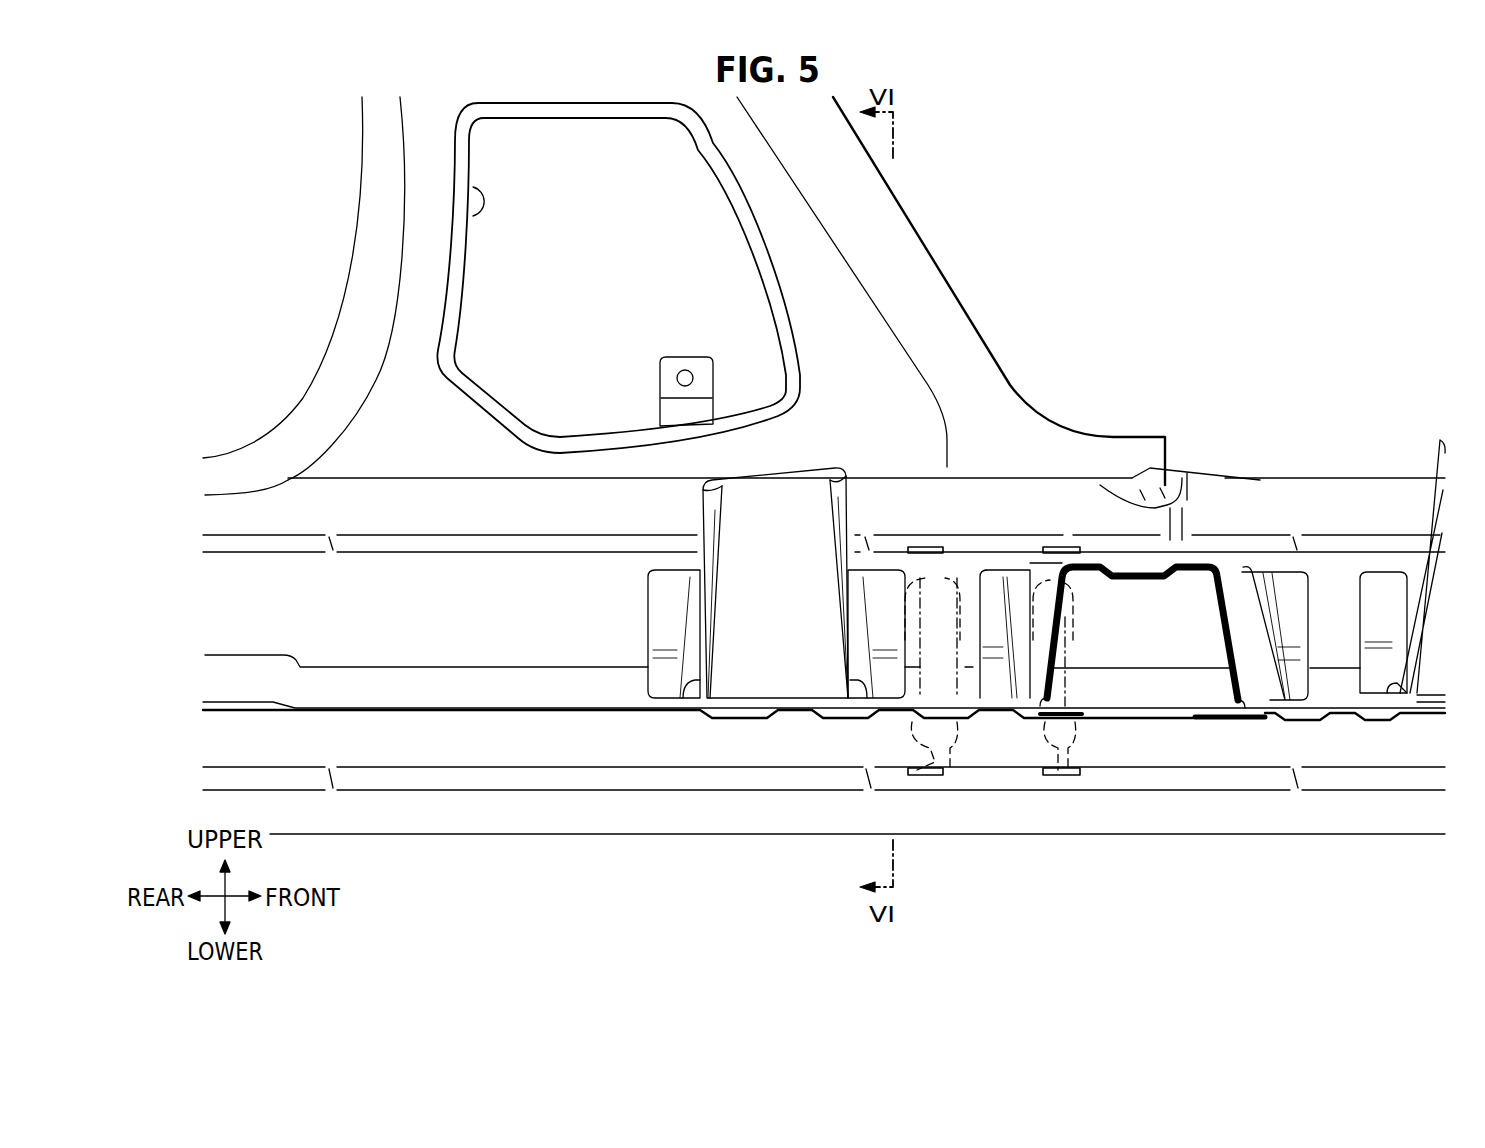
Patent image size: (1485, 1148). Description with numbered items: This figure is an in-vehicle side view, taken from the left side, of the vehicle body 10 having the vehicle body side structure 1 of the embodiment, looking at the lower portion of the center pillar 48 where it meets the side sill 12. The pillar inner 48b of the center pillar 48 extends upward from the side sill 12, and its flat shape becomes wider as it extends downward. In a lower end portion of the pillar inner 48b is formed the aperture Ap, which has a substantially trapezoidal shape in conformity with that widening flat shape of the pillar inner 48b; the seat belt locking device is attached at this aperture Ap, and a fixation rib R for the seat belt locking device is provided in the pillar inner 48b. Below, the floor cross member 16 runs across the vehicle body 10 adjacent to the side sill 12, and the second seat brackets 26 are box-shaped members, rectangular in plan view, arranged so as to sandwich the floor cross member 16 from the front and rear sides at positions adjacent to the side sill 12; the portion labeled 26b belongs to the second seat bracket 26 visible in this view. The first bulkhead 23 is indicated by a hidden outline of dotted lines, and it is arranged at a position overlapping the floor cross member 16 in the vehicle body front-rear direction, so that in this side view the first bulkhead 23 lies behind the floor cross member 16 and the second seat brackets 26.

The vehicle body side structure 1 is at (922, 210).
The vehicle body 10 is at (1163, 320).
The side sill 12 is at (575, 502).
The floor cross member 16 is at (1130, 567).
The first bulkhead 23 is at (977, 630).
The second seat bracket 26 is at (1433, 507).
The bracket flange portion 26b is at (800, 473).
The center pillar 48 is at (898, 277).
The pillar inner 48b is at (1180, 504).
The aperture Ap is at (486, 211).
The fixation rib R is at (683, 357).